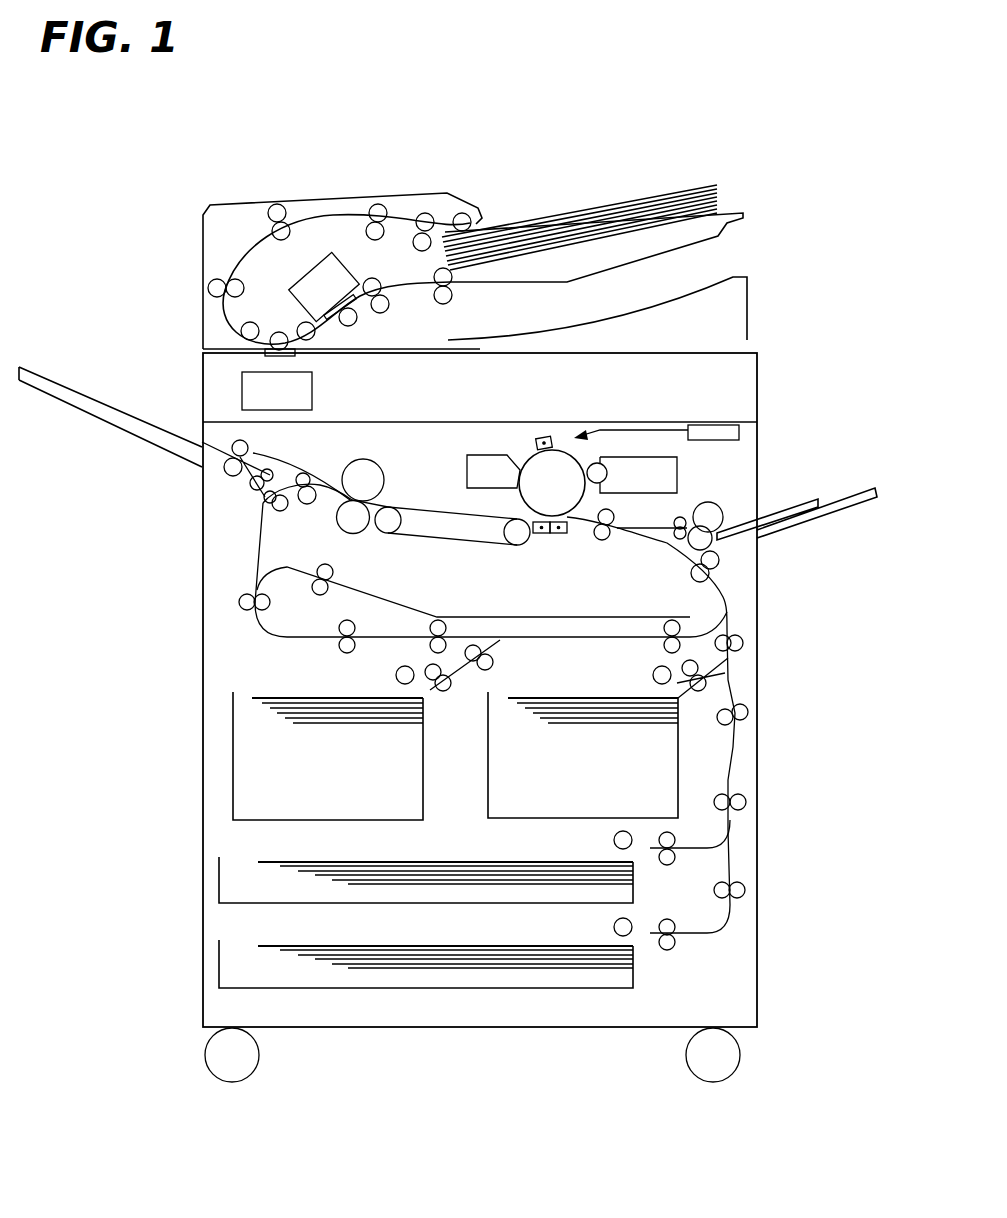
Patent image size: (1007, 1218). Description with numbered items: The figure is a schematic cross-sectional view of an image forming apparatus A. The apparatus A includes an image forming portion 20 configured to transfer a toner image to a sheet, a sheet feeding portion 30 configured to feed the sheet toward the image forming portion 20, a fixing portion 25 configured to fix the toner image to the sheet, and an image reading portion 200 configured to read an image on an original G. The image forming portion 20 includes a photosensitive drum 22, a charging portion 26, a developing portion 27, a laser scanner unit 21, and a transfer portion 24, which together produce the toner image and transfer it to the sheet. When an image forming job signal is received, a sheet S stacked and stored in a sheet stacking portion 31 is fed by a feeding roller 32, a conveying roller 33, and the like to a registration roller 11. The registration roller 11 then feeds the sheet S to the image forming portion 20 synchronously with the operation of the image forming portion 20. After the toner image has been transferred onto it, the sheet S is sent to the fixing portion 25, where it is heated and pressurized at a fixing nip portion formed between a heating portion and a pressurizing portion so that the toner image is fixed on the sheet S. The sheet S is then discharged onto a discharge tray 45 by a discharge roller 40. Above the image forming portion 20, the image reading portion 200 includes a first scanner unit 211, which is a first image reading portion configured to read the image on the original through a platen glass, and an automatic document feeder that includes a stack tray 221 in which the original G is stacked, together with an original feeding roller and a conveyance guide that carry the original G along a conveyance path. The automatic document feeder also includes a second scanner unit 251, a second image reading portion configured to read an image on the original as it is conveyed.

The image forming apparatus A is at (290, 180).
The image reading portion 200 is at (150, 333).
The second scanner unit 251 is at (320, 258).
The original G is at (563, 213).
The stack tray 221 is at (602, 263).
The first scanner unit 211 is at (312, 390).
The discharge tray 45 is at (100, 417).
The discharge roller 40 is at (233, 468).
The fixing portion 25 is at (372, 447).
The developing portion 27 is at (488, 500).
The photosensitive drum 22 is at (527, 458).
The charging portion 26 is at (546, 436).
The laser scanner unit 21 is at (717, 425).
The image forming portion 20 is at (705, 464).
The transfer portion 24 is at (556, 540).
The registration roller 11 is at (610, 545).
The sheet feeding portion 30 is at (778, 872).
The sheet stacking portion 31 is at (233, 745).
The sheet S is at (298, 697).
The feeding roller 32 is at (396, 675).
The conveying roller 33 is at (735, 690).